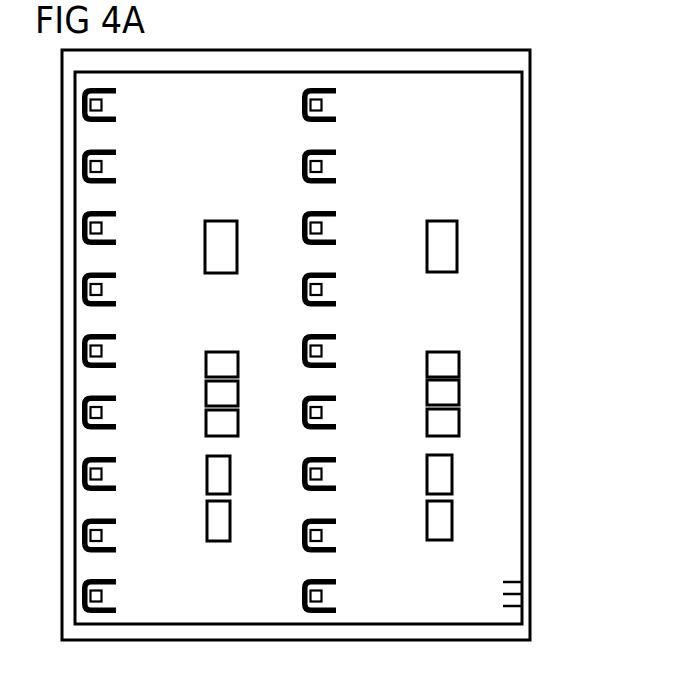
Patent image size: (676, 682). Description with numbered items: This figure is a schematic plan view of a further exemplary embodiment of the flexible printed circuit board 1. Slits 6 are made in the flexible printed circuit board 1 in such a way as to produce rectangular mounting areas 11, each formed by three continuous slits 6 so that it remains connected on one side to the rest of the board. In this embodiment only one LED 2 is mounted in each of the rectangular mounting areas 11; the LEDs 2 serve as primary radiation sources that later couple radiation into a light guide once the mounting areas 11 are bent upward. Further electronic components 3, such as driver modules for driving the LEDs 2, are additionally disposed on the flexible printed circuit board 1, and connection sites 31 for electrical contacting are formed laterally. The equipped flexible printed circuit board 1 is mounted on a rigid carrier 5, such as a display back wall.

The flexible printed circuit board 1 is at (531, 82).
The primary radiation source 2 is at (101, 474).
The electronic component 3 is at (457, 245).
The rigid carrier 5 is at (530, 630).
The slit 6 is at (83, 107).
The mounting area 11 is at (103, 100).
The connection site 31 is at (517, 590).